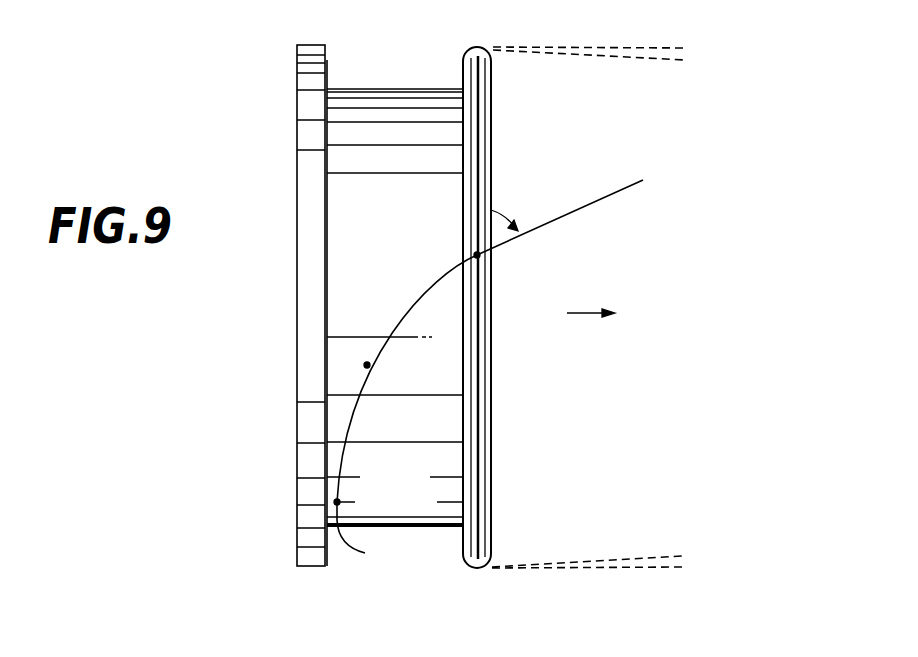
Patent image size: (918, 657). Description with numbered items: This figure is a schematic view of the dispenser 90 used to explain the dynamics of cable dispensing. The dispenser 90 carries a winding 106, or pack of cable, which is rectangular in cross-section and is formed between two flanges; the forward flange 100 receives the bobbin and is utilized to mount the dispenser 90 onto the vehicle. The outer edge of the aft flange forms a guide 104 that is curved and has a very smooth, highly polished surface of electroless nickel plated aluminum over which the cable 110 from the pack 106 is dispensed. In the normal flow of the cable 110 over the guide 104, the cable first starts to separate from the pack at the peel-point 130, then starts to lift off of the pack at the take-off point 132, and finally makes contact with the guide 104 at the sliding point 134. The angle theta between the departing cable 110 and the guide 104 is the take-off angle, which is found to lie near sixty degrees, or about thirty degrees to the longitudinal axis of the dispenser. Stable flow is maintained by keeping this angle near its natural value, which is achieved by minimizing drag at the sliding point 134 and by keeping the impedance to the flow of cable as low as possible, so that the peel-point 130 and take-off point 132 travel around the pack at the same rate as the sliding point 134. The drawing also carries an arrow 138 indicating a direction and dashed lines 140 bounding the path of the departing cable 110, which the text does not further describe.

The dispenser 90 is at (264, 539).
The forward flange 100 is at (297, 411).
The aft flange guide 104 is at (477, 88).
The winding 106 is at (378, 89).
The cable 110 is at (594, 202).
The peel-point 130 is at (370, 540).
The take-off point 132 is at (365, 363).
The sliding point 134 is at (477, 252).
The direction of movement 138 is at (583, 316).
The web path boundary 140 is at (581, 46).